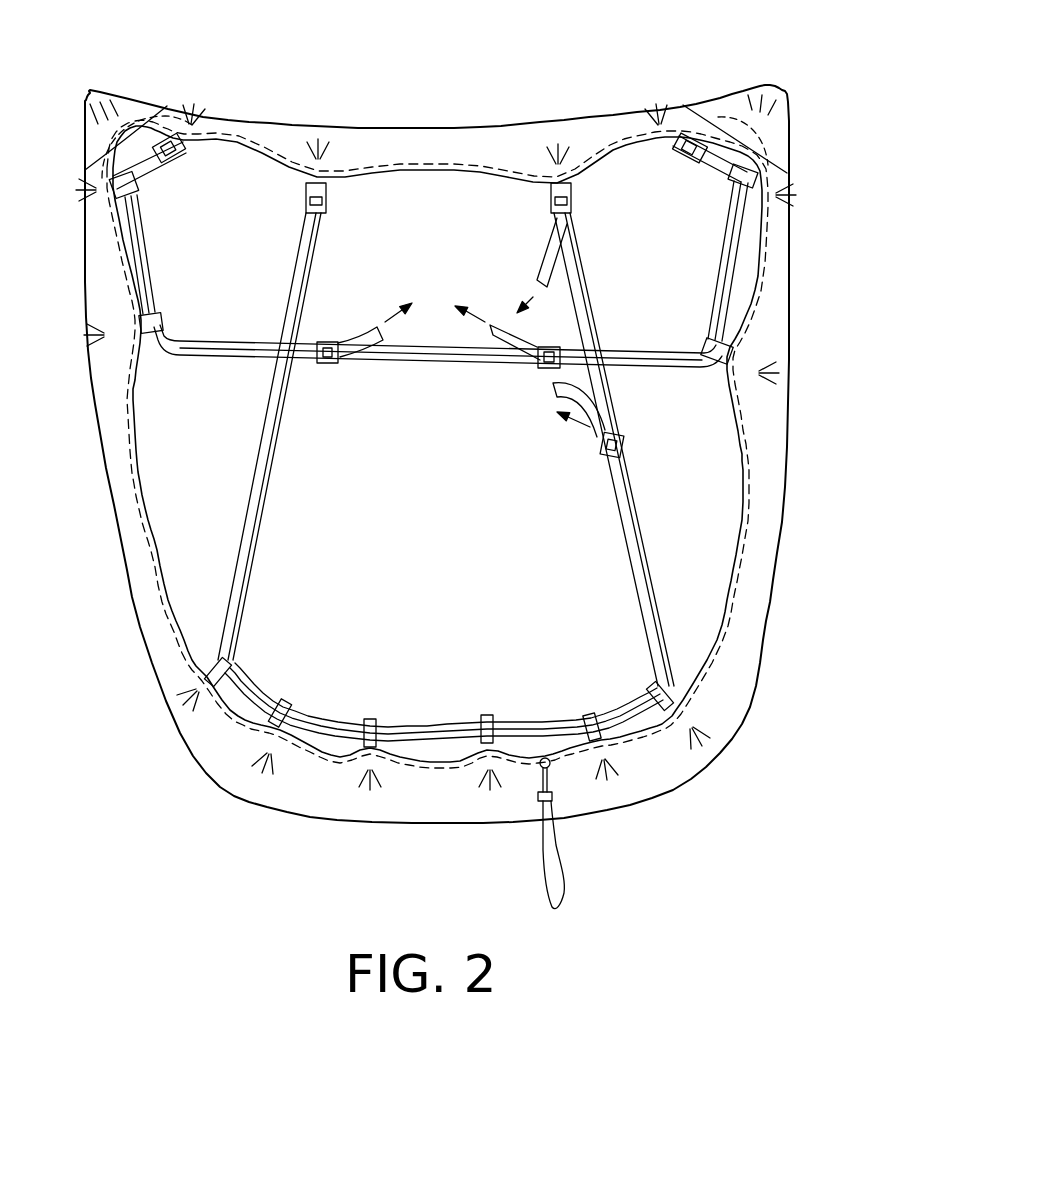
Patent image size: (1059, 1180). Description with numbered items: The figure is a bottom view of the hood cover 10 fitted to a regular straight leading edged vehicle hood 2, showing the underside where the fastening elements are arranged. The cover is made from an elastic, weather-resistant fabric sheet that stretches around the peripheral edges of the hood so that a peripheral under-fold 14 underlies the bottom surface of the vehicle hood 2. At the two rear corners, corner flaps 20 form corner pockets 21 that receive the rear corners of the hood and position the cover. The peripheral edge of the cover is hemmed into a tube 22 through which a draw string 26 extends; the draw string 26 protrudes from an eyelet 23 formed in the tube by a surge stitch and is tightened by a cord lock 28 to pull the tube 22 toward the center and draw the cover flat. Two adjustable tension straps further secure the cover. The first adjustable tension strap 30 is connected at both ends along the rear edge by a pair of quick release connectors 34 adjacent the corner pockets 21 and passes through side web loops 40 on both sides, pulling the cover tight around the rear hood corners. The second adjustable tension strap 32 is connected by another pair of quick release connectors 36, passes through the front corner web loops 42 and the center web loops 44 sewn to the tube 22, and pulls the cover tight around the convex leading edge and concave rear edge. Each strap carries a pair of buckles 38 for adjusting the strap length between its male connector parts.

The vehicle hood 2 is at (185, 567).
The hood cover 10 is at (360, 113).
The peripheral under-fold 14 is at (497, 147).
The corner flap 20 is at (137, 115).
The corner pocket 21 is at (167, 132).
The tube 22 is at (740, 450).
The eyelet 23 is at (540, 767).
The draw string 26 is at (556, 860).
The cord lock 28 is at (553, 797).
The first adjustable tension strap 30 is at (162, 266).
The second adjustable tension strap 32 is at (289, 450).
The quick release connector 34 is at (175, 153).
The quick release connector 36 is at (560, 200).
The buckle 38 is at (333, 363).
The side web loop 40 is at (134, 189).
The front corner web loop 42 is at (225, 660).
The center web loop 44 is at (373, 720).